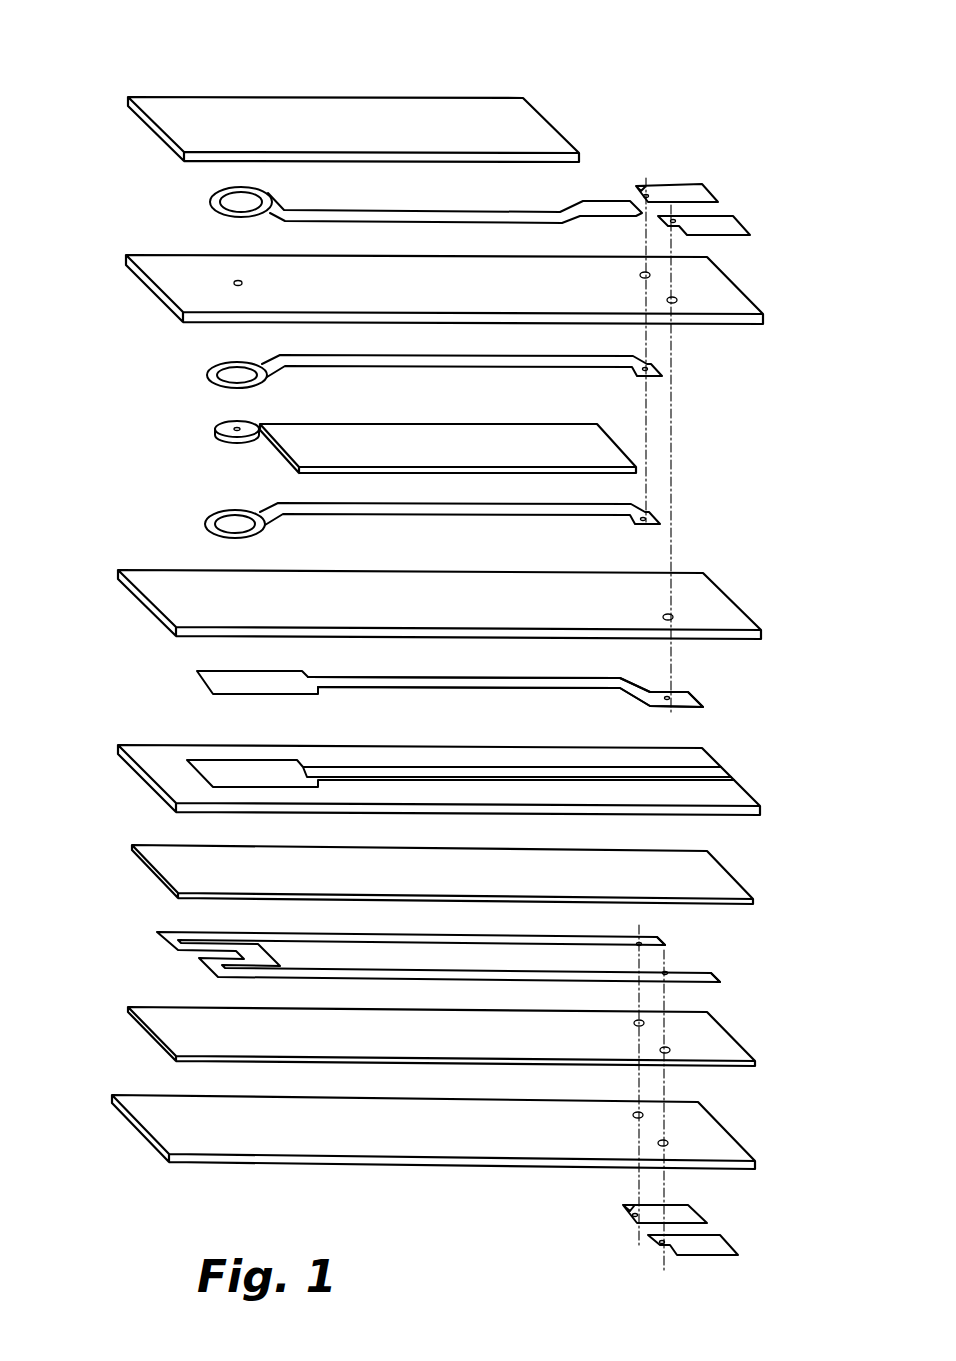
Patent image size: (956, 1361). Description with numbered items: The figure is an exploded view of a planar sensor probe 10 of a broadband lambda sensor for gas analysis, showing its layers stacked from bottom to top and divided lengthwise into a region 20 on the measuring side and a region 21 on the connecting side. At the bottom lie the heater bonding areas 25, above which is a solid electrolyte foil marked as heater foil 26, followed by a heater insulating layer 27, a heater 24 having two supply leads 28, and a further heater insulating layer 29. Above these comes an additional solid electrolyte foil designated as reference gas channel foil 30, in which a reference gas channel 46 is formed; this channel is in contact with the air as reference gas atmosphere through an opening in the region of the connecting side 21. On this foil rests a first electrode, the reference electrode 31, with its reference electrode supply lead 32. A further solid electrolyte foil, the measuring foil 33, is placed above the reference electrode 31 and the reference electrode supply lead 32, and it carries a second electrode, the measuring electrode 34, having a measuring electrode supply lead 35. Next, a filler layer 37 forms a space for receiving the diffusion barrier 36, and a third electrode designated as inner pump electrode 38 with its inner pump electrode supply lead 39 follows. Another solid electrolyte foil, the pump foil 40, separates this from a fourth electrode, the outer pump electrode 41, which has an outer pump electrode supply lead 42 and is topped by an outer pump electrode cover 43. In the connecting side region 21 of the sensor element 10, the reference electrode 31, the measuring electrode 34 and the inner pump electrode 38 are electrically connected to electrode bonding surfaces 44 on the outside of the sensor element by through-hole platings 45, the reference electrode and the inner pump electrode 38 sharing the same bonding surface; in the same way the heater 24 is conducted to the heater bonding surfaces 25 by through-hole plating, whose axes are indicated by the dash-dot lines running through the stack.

The planar sensor probe 10 is at (685, 148).
The region on the measuring side 20 is at (133, 1135).
The region on the connecting side 21 is at (587, 1172).
The heater 24 is at (183, 956).
The heater bonding areas 25 is at (720, 1225).
The heater foil 26 is at (708, 1133).
The heater insulating layer 27 is at (713, 1033).
The supply leads 28 is at (683, 971).
The further heater insulating layer 29 is at (713, 883).
The reference gas channel foil 30 is at (732, 797).
The reference electrode 31 is at (225, 678).
The reference electrode supply lead 32 is at (523, 685).
The measuring foil 33 is at (712, 597).
The measuring electrode 34 is at (209, 515).
The measuring electrode supply lead 35 is at (547, 512).
The diffusion barrier 36 is at (221, 426).
The filler layer 37 is at (443, 430).
The inner pump electrode 38 is at (207, 373).
The inner pump electrode supply lead 39 is at (605, 363).
The pump foil 40 is at (180, 278).
The outer pump electrode 41 is at (211, 202).
The outer pump electrode supply lead 42 is at (597, 204).
The outer pump electrode cover 43 is at (194, 112).
The electrode bonding surfaces 44 is at (730, 203).
The through-hole platings 45 is at (666, 300).
The reference gas channel 46 is at (208, 777).